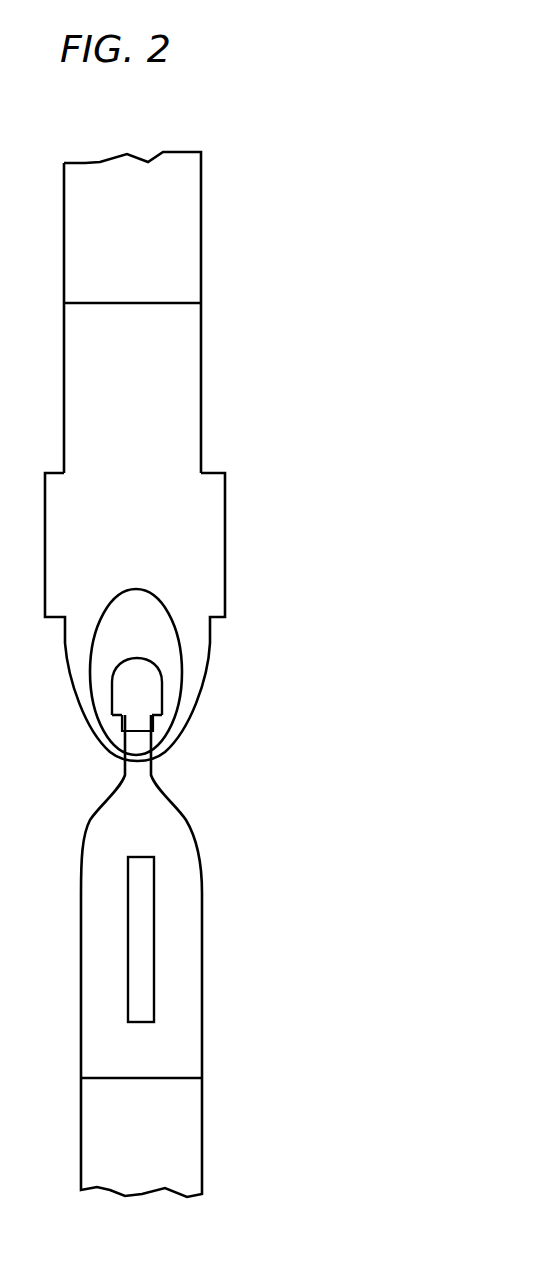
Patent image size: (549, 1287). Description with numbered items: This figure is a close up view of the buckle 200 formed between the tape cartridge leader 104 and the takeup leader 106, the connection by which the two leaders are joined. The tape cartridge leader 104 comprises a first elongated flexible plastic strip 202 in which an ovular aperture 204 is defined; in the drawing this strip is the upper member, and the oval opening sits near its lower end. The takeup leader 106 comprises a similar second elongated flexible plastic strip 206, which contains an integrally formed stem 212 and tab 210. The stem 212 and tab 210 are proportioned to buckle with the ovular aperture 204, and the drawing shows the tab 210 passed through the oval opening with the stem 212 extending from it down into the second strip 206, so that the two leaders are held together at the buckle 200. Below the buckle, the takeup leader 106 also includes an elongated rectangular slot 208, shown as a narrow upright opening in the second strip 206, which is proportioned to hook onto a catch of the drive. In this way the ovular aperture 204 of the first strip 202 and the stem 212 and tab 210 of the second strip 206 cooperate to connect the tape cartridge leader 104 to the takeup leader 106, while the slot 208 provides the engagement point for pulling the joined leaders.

The tape cartridge leader 104 is at (201, 218).
The takeup leader 106 is at (203, 1124).
The connector assembly 200 is at (345, 600).
The first elongated flexible plastic strip 202 is at (225, 545).
The ovular aperture 204 is at (182, 642).
The tab 210 is at (147, 697).
The stem 212 is at (153, 723).
The second elongated flexible plastic strip 206 is at (198, 860).
The elongated rectangular slot 208 is at (154, 943).